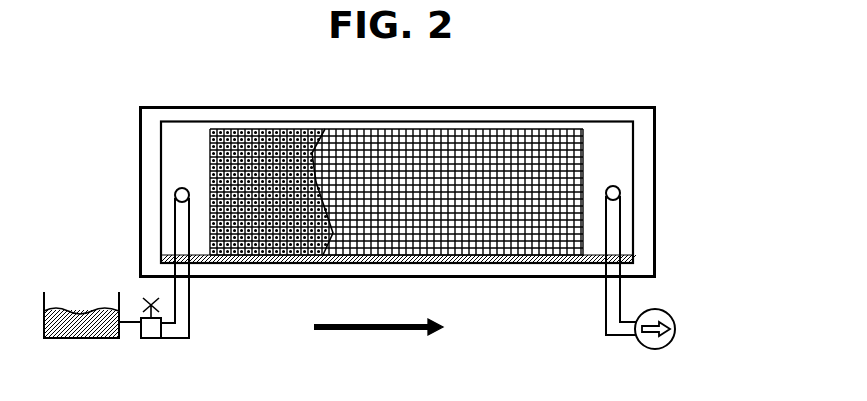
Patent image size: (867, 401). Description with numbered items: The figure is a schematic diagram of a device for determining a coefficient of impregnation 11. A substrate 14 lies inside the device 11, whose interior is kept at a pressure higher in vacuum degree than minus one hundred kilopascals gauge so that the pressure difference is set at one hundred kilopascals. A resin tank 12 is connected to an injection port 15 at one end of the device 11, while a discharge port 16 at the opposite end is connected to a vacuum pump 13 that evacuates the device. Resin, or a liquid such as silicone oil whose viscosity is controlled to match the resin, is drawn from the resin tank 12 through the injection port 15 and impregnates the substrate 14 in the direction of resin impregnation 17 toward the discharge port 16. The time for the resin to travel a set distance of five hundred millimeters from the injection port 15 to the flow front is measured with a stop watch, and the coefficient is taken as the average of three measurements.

The device for determining a coefficient of impregnation 11 is at (292, 106).
The resin tank 12 is at (68, 340).
The vacuum pump 13 is at (650, 349).
The substrate 14 is at (402, 130).
The injection port 15 is at (175, 195).
The discharge port 16 is at (620, 195).
The direction of resin impregnation 17 is at (378, 334).